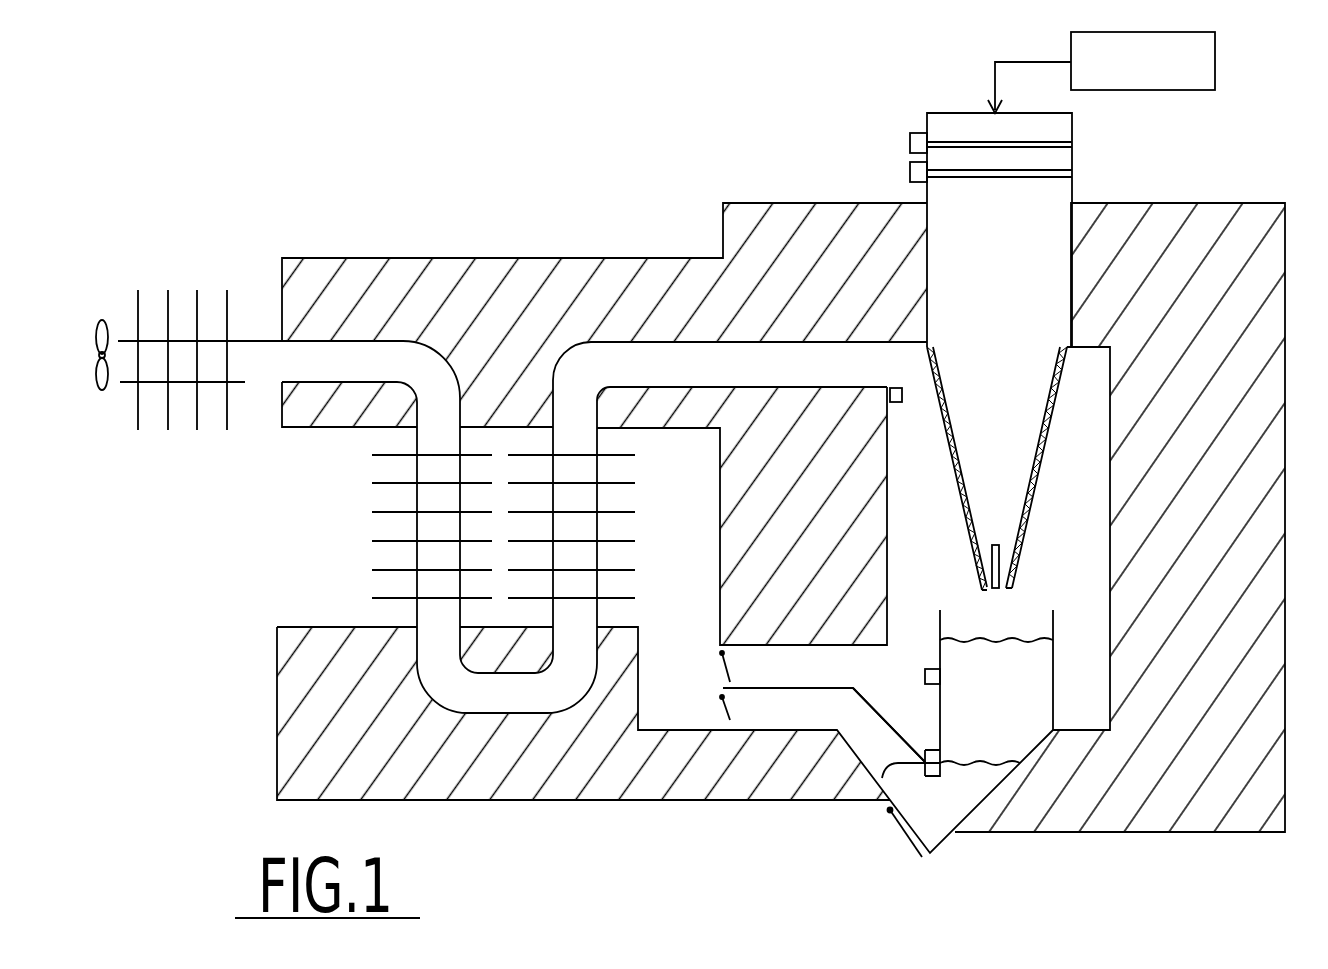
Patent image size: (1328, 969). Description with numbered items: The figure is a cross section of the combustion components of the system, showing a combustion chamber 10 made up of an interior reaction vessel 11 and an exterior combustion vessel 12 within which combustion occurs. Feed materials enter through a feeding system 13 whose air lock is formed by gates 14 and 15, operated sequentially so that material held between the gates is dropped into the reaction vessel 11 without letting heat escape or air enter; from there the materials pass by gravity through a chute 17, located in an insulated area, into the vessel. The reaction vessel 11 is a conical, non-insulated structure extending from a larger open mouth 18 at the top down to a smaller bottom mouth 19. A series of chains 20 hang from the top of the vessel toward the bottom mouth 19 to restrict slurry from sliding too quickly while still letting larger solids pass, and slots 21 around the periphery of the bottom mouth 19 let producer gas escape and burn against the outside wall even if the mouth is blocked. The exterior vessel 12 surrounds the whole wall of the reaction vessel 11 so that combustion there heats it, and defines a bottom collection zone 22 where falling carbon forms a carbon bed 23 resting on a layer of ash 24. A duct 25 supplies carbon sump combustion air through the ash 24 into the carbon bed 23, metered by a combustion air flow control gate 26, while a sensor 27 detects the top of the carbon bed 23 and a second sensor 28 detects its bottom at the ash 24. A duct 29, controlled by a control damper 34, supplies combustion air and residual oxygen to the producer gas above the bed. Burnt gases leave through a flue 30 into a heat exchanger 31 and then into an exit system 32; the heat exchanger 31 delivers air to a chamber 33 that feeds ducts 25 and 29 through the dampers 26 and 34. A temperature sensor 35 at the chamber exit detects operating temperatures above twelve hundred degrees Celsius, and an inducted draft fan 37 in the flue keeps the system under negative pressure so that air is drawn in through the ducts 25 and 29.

The combustion chamber 10 is at (1152, 182).
The interior reaction vessel 11 is at (962, 510).
The exterior combustion vessel 12 is at (1100, 700).
The feeding system 13 is at (837, 152).
The gate 14 is at (914, 136).
The gate 15 is at (912, 175).
The chute 17 is at (930, 265).
The open mouth 18 is at (981, 417).
The bottom mouth 19 is at (990, 592).
The chains 20 is at (1040, 433).
The slots 21 is at (997, 545).
The bottom collection zone 22 is at (942, 708).
The carbon bed 23 is at (1020, 691).
The layer of ash 24 is at (940, 797).
The duct 25 is at (863, 743).
The combustion air flow control gate 26 is at (725, 705).
The sensor 27 is at (925, 677).
The second sensor 28 is at (890, 810).
The duct 29 is at (770, 670).
The flue 30 is at (775, 362).
The heat exchanger 31 is at (505, 318).
The exit system 32 is at (127, 352).
The chamber 33 is at (690, 551).
The control damper 34 is at (727, 675).
The temperature sensor 35 is at (896, 388).
The inducted draft fan 37 is at (100, 386).